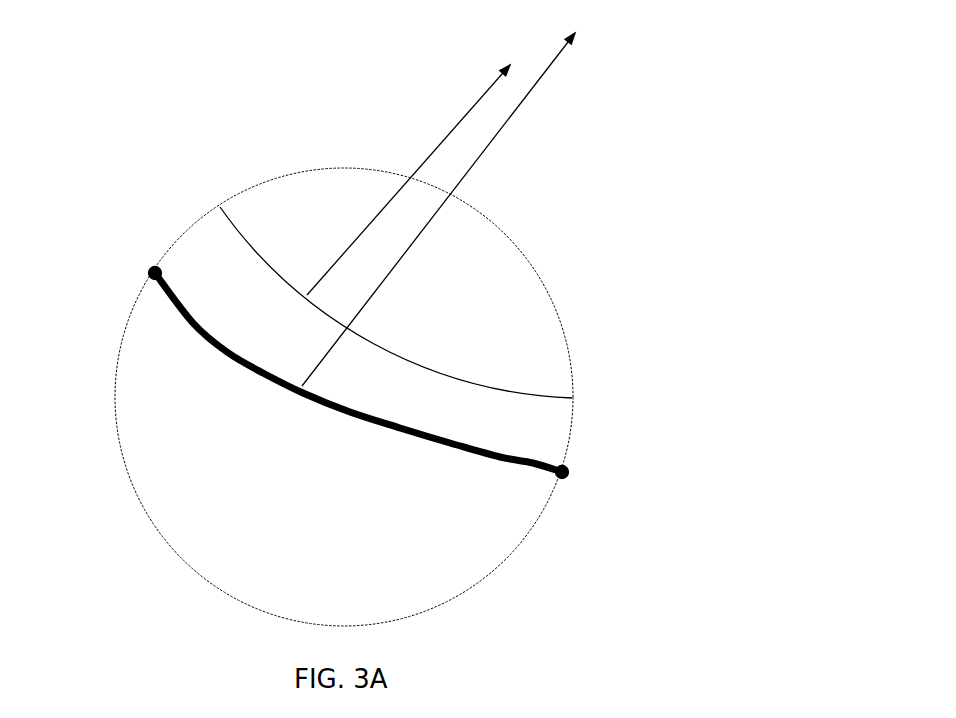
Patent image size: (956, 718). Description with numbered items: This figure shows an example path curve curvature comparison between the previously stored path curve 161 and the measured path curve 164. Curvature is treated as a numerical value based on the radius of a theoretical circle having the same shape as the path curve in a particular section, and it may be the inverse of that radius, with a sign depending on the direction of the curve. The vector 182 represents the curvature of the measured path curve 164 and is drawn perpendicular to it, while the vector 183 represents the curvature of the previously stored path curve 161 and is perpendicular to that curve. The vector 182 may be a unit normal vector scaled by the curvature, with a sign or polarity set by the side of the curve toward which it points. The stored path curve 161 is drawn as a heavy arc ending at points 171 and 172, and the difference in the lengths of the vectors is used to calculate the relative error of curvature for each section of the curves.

The previously stored path curve 161 is at (196, 336).
The measured path curve 164 is at (481, 385).
The first point on sphere 171 is at (148, 273).
The second point on sphere 172 is at (567, 477).
The vector 182 is at (458, 120).
The vector 183 is at (535, 87).